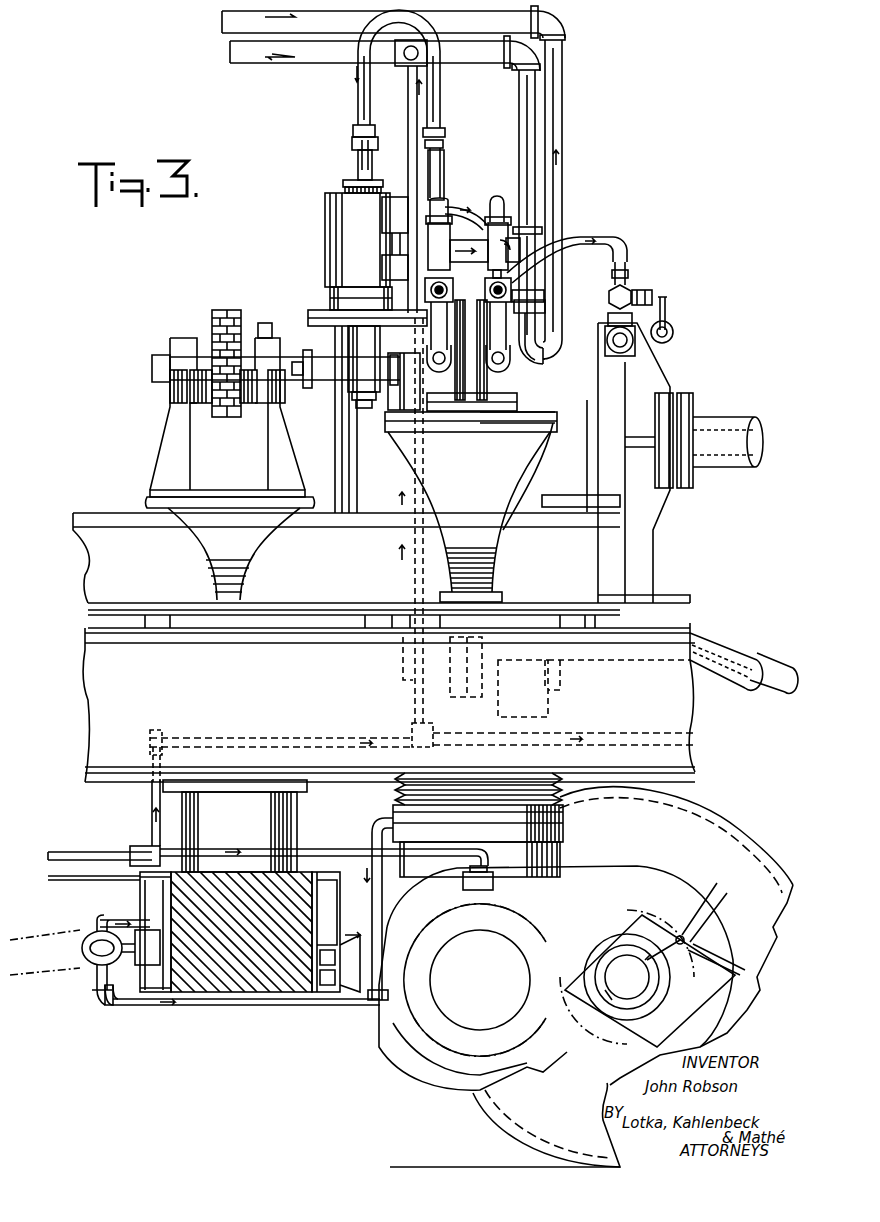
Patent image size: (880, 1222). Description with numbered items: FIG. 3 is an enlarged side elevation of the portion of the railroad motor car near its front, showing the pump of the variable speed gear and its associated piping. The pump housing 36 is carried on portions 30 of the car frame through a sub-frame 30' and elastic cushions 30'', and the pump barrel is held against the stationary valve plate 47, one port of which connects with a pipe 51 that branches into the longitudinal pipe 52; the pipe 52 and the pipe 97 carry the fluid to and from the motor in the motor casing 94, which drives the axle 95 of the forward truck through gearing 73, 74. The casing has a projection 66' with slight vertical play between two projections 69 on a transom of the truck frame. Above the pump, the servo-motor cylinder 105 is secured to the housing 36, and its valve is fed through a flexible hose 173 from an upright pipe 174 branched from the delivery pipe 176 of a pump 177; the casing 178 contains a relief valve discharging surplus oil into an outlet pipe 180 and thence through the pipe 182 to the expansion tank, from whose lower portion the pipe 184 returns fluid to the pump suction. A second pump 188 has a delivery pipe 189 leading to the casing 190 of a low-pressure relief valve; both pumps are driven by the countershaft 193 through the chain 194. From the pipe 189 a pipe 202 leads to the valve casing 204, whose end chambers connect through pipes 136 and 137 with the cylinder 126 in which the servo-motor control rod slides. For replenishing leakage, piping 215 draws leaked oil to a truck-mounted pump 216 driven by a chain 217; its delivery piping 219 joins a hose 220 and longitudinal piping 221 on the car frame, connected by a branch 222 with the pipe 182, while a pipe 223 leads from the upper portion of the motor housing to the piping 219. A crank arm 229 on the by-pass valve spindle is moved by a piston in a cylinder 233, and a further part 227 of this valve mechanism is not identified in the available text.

The car frame portions 30 is at (389, 702).
The sub-frame 30' is at (644, 587).
The elastic cushions 30'' is at (381, 570).
The housing 36 is at (502, 501).
The valve plate 47 is at (634, 463).
The pipe 51 is at (709, 440).
The longitudinal pipe 52 is at (722, 645).
The projection 66' is at (241, 970).
The projections 69 is at (330, 935).
The gearing 73 is at (613, 1047).
The gearing 74 is at (443, 1047).
The motor casing 94 is at (392, 1058).
The axle 95 is at (620, 973).
The pipe 97 is at (780, 655).
The cylinder 105 is at (325, 226).
The cylinder 126 is at (352, 251).
The pipe 136 is at (489, 193).
The pipe 137 is at (475, 272).
The hose 173 is at (360, 100).
The upright pipe 174 is at (442, 165).
The delivery pipe 176 is at (395, 332).
The pump 177 is at (439, 366).
The casing 178 is at (345, 255).
The outlet pipe 180 is at (476, 230).
The pipe 182 is at (563, 292).
The pipe 184 is at (558, 157).
The pump 188 is at (496, 350).
The delivery pipe 189 is at (545, 370).
The casing 190 is at (548, 243).
The countershaft 193 is at (340, 385).
The chain 194 is at (218, 310).
The pipe 202 is at (567, 260).
The valve casing 204 is at (630, 290).
The piping 215 is at (380, 822).
The pump 216 is at (90, 950).
The chain 217 is at (75, 973).
The piping 219 is at (115, 920).
The hose 220 is at (86, 852).
The longitudinal piping 221 is at (206, 738).
The branch 222 is at (408, 127).
The pipe 223 is at (330, 852).
The valve body 227 is at (652, 292).
The crank arm 229 is at (666, 303).
The cylinder 233 is at (673, 330).